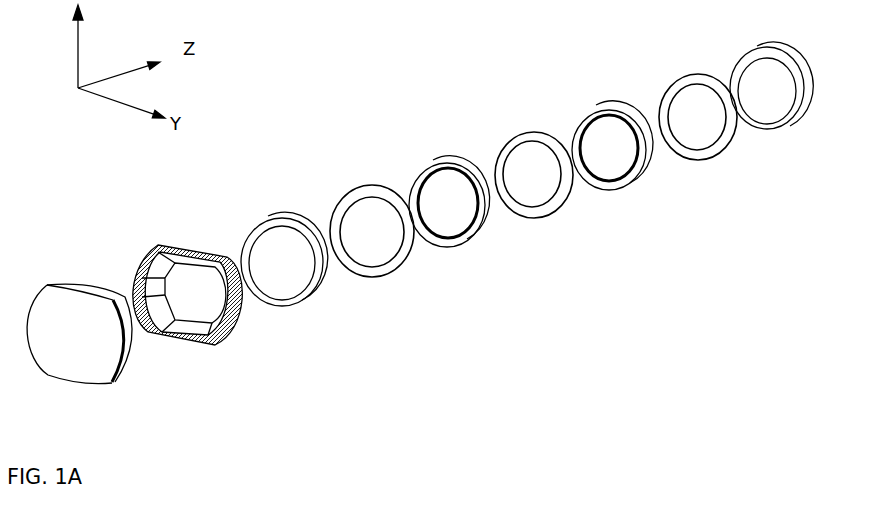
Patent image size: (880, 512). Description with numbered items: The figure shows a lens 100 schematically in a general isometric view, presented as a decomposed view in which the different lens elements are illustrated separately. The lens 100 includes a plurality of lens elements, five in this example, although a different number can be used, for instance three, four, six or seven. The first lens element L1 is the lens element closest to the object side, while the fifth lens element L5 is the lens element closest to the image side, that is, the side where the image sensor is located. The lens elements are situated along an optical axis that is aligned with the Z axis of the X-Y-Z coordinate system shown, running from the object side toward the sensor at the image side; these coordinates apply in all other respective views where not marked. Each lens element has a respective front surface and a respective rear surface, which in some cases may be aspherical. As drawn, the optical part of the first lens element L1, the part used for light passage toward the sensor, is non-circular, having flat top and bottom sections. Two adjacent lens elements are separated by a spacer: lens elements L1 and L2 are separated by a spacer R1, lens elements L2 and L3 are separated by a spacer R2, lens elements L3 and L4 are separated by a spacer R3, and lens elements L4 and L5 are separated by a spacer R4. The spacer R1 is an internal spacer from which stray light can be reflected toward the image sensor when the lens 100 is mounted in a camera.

The lens 100 is at (283, 153).
The first lens element L1 is at (79, 359).
The spacer R1 is at (188, 321).
The second lens element L2 is at (284, 290).
The spacer R2 is at (372, 262).
The third lens element L3 is at (449, 234).
The spacer R3 is at (534, 204).
The fourth lens element L4 is at (612, 174).
The spacer R4 is at (698, 144).
The fifth lens element L5 is at (771, 117).